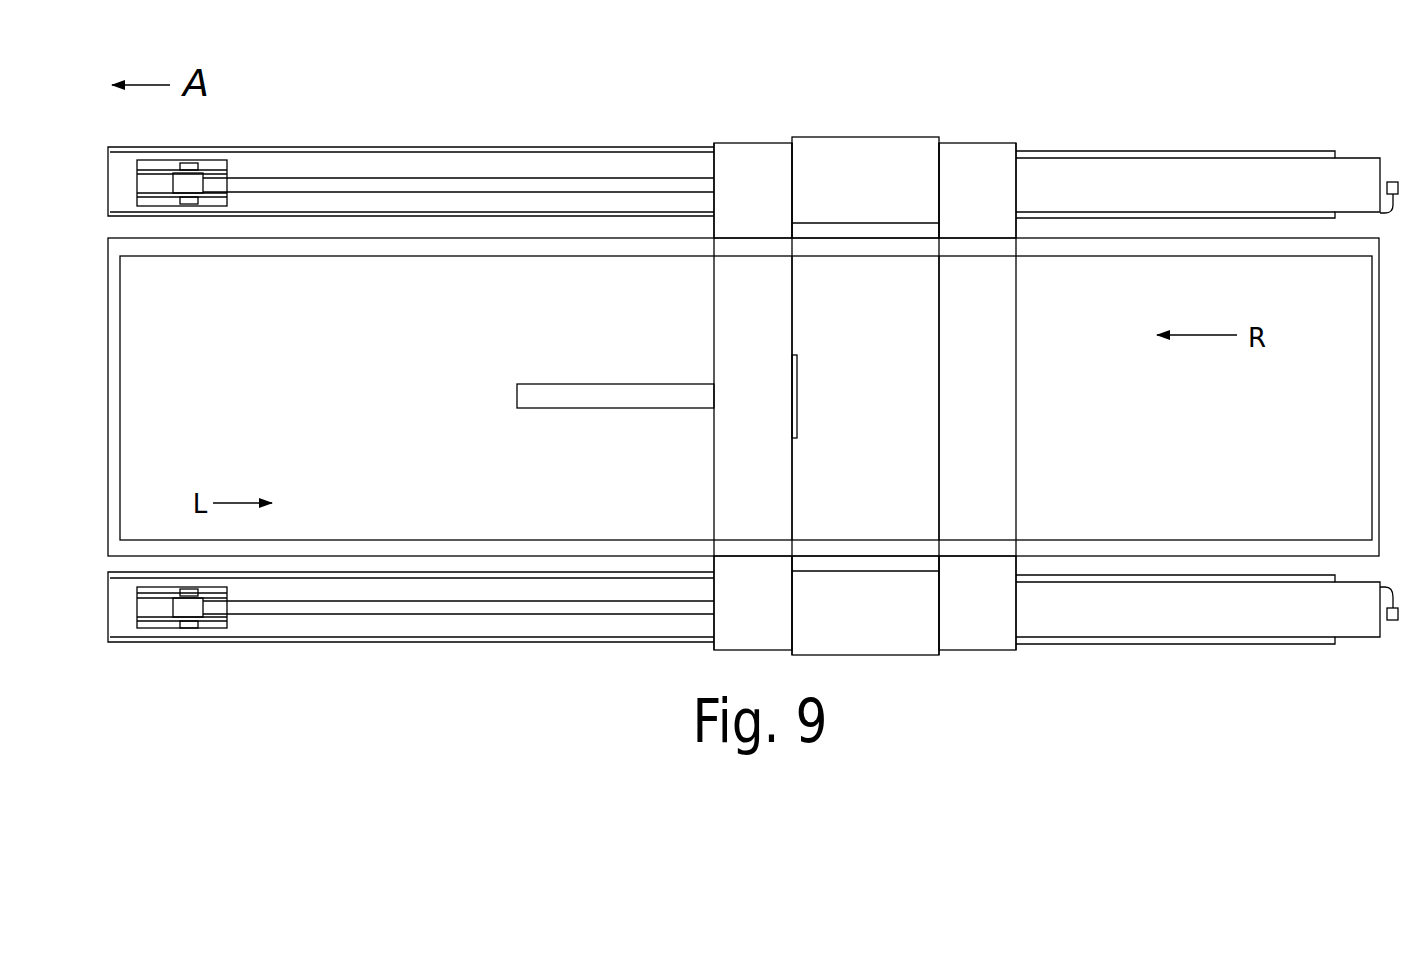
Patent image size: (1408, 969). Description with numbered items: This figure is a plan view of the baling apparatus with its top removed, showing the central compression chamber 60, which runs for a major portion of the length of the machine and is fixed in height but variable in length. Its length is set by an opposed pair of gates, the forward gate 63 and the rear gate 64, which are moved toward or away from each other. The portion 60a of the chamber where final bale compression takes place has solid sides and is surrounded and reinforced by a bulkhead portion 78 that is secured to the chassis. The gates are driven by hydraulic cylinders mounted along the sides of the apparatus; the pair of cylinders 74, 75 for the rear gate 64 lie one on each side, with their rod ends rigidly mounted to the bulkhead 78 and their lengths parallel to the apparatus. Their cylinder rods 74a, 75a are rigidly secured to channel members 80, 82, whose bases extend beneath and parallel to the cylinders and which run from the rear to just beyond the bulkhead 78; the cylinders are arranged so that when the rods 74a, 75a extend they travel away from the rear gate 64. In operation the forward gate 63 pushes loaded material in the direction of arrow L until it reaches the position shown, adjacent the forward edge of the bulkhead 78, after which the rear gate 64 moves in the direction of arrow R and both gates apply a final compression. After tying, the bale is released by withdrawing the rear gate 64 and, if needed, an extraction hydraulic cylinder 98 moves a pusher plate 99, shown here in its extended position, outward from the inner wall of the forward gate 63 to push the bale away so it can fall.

The compression chamber 60 is at (743, 397).
The bale forming portion of the compression chamber 60a is at (865, 398).
The forward gate 63 is at (732, 488).
The rear gate 64 is at (1006, 475).
The hydraulic cylinder 74 is at (1207, 665).
The cylinder rod 74a is at (275, 606).
The hydraulic cylinder 75 is at (1207, 125).
The cylinder rod 75a is at (455, 187).
The bulkhead portion 78 is at (865, 396).
The channel member 80 is at (1213, 647).
The channel member 82 is at (1212, 143).
The extraction hydraulic cylinder 98 is at (605, 390).
The pusher plate 99 is at (799, 428).